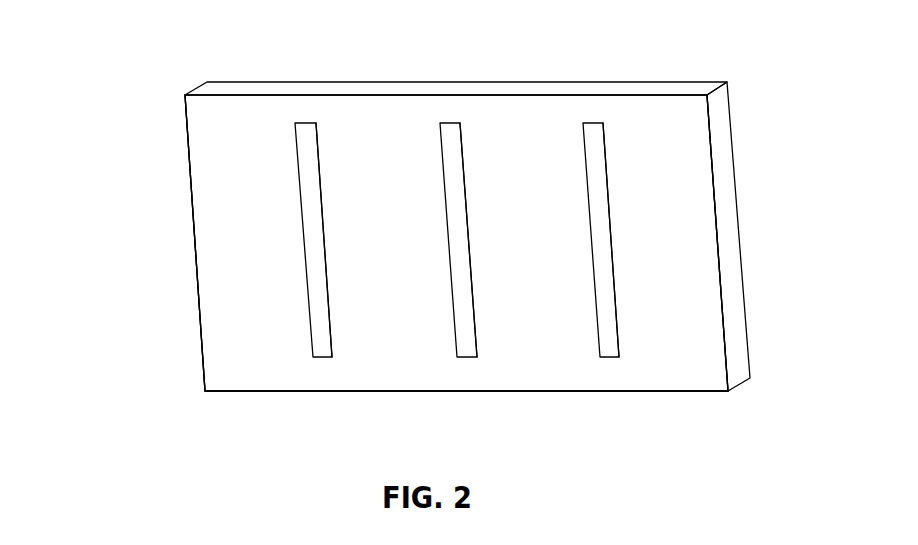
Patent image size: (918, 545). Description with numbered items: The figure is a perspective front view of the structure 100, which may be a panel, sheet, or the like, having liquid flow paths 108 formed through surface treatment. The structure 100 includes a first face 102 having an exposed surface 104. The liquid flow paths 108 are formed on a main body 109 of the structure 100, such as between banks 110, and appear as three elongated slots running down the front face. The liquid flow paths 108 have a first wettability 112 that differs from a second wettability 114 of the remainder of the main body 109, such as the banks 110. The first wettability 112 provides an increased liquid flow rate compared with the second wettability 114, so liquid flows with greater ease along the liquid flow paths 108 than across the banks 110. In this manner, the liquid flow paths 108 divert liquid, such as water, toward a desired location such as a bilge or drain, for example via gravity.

The structure 100 is at (121, 111).
The first face 102 is at (223, 270).
The exposed surface 104 is at (703, 248).
The liquid flow paths 108 is at (305, 148).
The main body 109 is at (223, 342).
The banks 110 is at (252, 150).
The first wettability 112 is at (317, 220).
The second wettability 114 is at (207, 205).